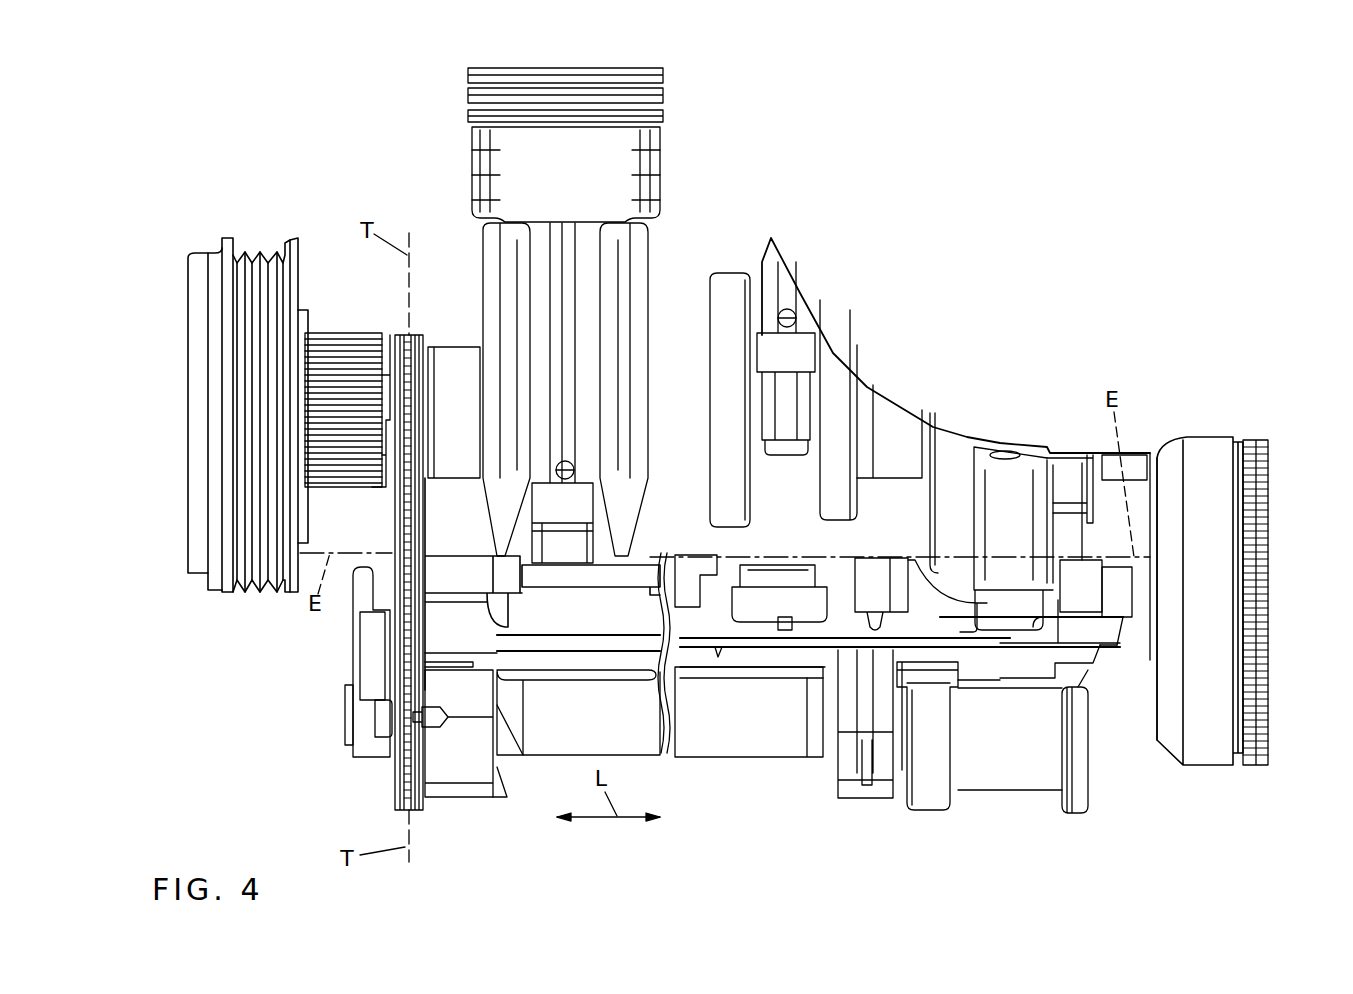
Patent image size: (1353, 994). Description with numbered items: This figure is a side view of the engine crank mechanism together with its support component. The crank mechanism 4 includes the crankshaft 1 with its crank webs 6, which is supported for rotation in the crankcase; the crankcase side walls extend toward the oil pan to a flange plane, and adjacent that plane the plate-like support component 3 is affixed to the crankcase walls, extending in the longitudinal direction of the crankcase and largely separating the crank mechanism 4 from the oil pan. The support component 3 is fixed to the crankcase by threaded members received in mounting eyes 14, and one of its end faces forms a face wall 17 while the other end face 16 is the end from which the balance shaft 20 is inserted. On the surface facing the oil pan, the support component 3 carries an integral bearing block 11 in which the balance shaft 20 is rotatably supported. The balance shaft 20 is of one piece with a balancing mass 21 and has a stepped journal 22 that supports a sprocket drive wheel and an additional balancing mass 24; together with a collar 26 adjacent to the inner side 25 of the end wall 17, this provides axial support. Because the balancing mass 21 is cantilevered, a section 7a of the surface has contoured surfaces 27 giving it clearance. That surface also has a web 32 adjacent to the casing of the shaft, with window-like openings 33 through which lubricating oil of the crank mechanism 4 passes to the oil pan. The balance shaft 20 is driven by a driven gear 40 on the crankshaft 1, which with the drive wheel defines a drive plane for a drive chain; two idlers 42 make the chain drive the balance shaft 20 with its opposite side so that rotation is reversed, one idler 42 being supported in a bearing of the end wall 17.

The crankshaft 1 is at (460, 360).
The support component 3 is at (1113, 590).
The crank mechanism 4 is at (1022, 484).
The crank webs 6 is at (735, 335).
The section of surface 7a is at (1022, 682).
The bearing block 11 is at (850, 760).
The mounting eyes 14 is at (1118, 642).
The end face 16 is at (1140, 617).
The face wall 17 is at (460, 772).
The balance shaft 20 is at (707, 745).
The balancing mass 21 is at (997, 770).
The stepped journal 22 is at (347, 698).
The additional balancing mass 24 is at (367, 643).
The inner side of end wall 25 is at (507, 797).
The collar 26 is at (497, 705).
The contoured surfaces 27 is at (1088, 670).
The web 32 is at (1110, 630).
The window-like openings 33 is at (772, 605).
The driven gear 40 is at (392, 378).
The idlers 42 is at (387, 718).